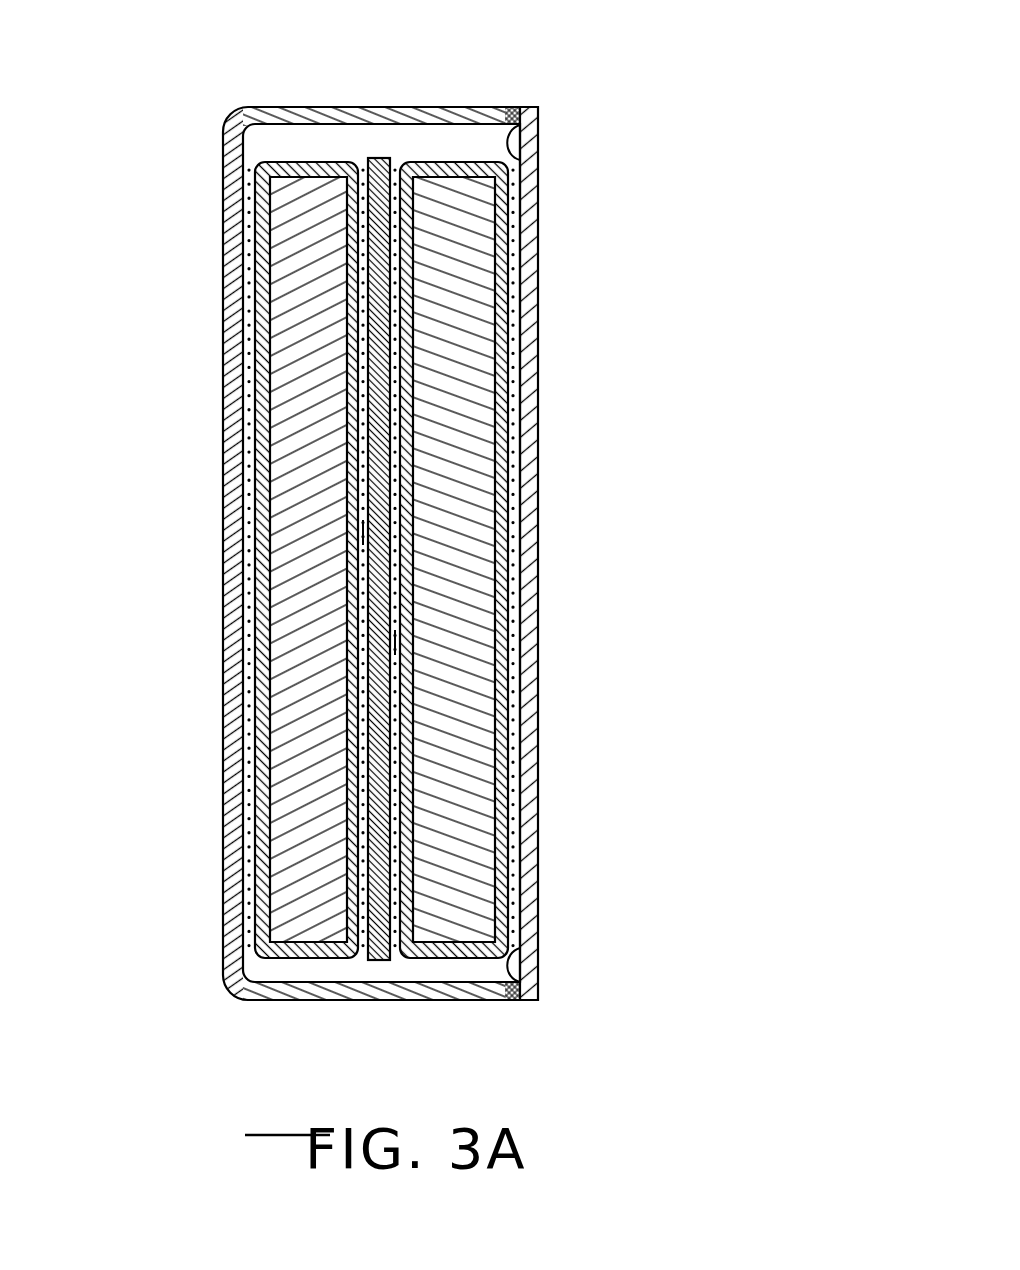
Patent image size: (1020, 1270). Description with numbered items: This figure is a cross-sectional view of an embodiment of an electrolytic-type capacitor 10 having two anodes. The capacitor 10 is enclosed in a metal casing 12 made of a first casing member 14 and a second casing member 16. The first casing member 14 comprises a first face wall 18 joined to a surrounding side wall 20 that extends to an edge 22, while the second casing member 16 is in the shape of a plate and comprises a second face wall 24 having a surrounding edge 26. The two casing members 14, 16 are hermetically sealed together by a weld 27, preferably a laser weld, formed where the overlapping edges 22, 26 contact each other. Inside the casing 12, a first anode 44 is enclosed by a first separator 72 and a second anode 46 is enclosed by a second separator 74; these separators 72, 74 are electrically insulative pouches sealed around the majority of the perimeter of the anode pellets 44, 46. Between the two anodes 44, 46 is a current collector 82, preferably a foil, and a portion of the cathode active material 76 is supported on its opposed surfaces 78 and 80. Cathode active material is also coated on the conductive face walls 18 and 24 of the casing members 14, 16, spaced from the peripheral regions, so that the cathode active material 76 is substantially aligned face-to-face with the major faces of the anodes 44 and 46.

The capacitor 10 is at (395, 530).
The casing 12 is at (356, 529).
The first casing member 14 is at (225, 403).
The second casing member 16 is at (540, 465).
The first face wall 18 is at (225, 628).
The side wall 20 is at (441, 118).
The edge 22 is at (520, 163).
The second face wall 24 is at (526, 620).
The surrounding edge 26 is at (538, 950).
The weld 27 is at (508, 107).
The first anode 44 is at (302, 922).
The second anode 46 is at (455, 828).
The first separator 72 is at (322, 172).
The second separator 74 is at (520, 265).
The cathode active material 76 is at (246, 287).
The first opposed surface of current collector 78 is at (362, 533).
The second opposed surface of current collector 80 is at (398, 642).
The current collector 82 is at (383, 158).